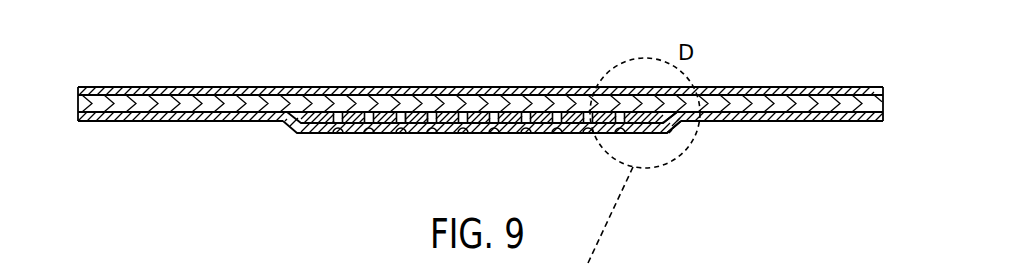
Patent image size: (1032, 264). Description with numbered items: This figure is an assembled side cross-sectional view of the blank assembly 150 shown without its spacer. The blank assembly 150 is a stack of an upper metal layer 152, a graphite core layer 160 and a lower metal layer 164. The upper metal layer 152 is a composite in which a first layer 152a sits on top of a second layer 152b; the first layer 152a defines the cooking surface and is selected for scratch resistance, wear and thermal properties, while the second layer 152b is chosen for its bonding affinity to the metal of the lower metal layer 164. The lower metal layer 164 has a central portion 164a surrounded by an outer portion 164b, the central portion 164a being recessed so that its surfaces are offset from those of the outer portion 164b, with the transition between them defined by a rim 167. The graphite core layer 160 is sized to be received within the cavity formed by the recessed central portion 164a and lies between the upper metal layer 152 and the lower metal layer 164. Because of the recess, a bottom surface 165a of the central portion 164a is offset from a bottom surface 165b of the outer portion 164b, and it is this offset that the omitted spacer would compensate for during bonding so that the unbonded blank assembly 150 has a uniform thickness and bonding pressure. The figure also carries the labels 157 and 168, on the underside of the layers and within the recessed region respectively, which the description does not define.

The blank assembly 150 is at (719, 70).
The upper metal layer 152 is at (72, 87).
The first layer 152a is at (783, 90).
The second layer 152b is at (863, 107).
The second outer layer 157 is at (108, 121).
The graphite core layer 160 is at (418, 112).
The lower metal layer 164 is at (840, 122).
The central portion 164a is at (548, 134).
The outer portion 164b is at (198, 122).
The bottom surface of central portion 165a is at (461, 134).
The bottom surface of outer portion 165b is at (772, 122).
The rim 167 is at (672, 135).
The standoff ribs 168 is at (402, 134).